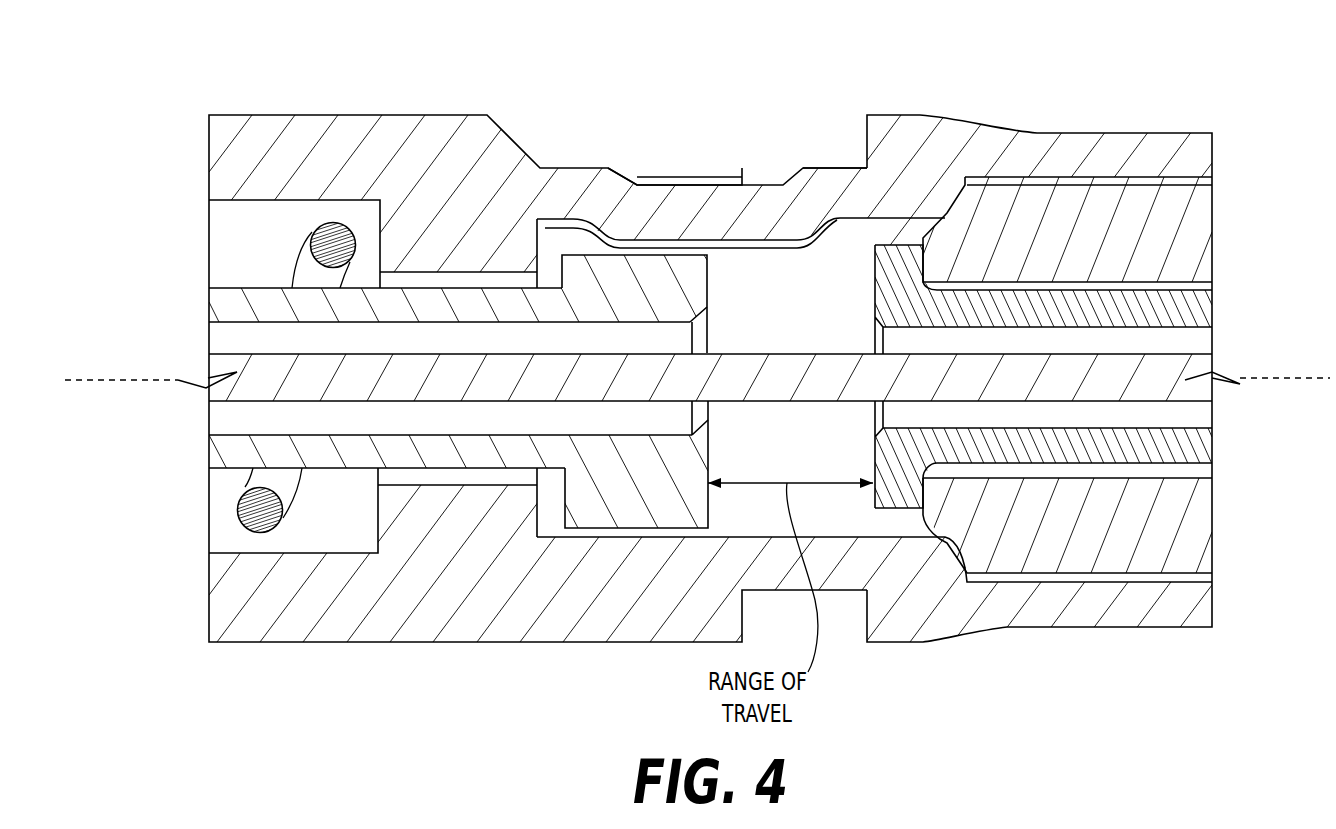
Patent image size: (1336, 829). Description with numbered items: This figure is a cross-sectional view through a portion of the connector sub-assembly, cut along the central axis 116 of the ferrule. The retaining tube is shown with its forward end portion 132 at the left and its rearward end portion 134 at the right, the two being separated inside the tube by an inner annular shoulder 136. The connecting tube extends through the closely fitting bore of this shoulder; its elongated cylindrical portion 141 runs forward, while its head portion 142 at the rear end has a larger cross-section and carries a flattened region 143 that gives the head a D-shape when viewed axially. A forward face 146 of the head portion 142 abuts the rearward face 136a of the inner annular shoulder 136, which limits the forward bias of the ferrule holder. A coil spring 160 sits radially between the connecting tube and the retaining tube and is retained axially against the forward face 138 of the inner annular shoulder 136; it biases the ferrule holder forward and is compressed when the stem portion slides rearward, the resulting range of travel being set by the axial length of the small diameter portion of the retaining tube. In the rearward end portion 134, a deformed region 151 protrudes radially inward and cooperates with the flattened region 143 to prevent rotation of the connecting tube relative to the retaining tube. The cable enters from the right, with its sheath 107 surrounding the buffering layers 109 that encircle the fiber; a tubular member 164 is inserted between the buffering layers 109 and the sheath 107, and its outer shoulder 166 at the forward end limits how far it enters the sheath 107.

The sheath 107 is at (1140, 213).
The buffering layers 109 is at (1157, 392).
The axis 116 is at (133, 380).
The forward end portion 132 is at (283, 143).
The rearward end portion 134 is at (1083, 153).
The inner annular shoulder 136 is at (442, 190).
The rearward face 136a is at (545, 247).
The forward face 138 is at (375, 228).
The elongated cylindrical portion 141 is at (395, 456).
The head portion 142 is at (585, 280).
The flattened region 143 is at (680, 247).
The forward face 146 is at (560, 508).
The deformed region 151 is at (702, 183).
The coil spring 160 is at (263, 518).
The tubular member 164 is at (1155, 307).
The outer shoulder 166 is at (895, 263).